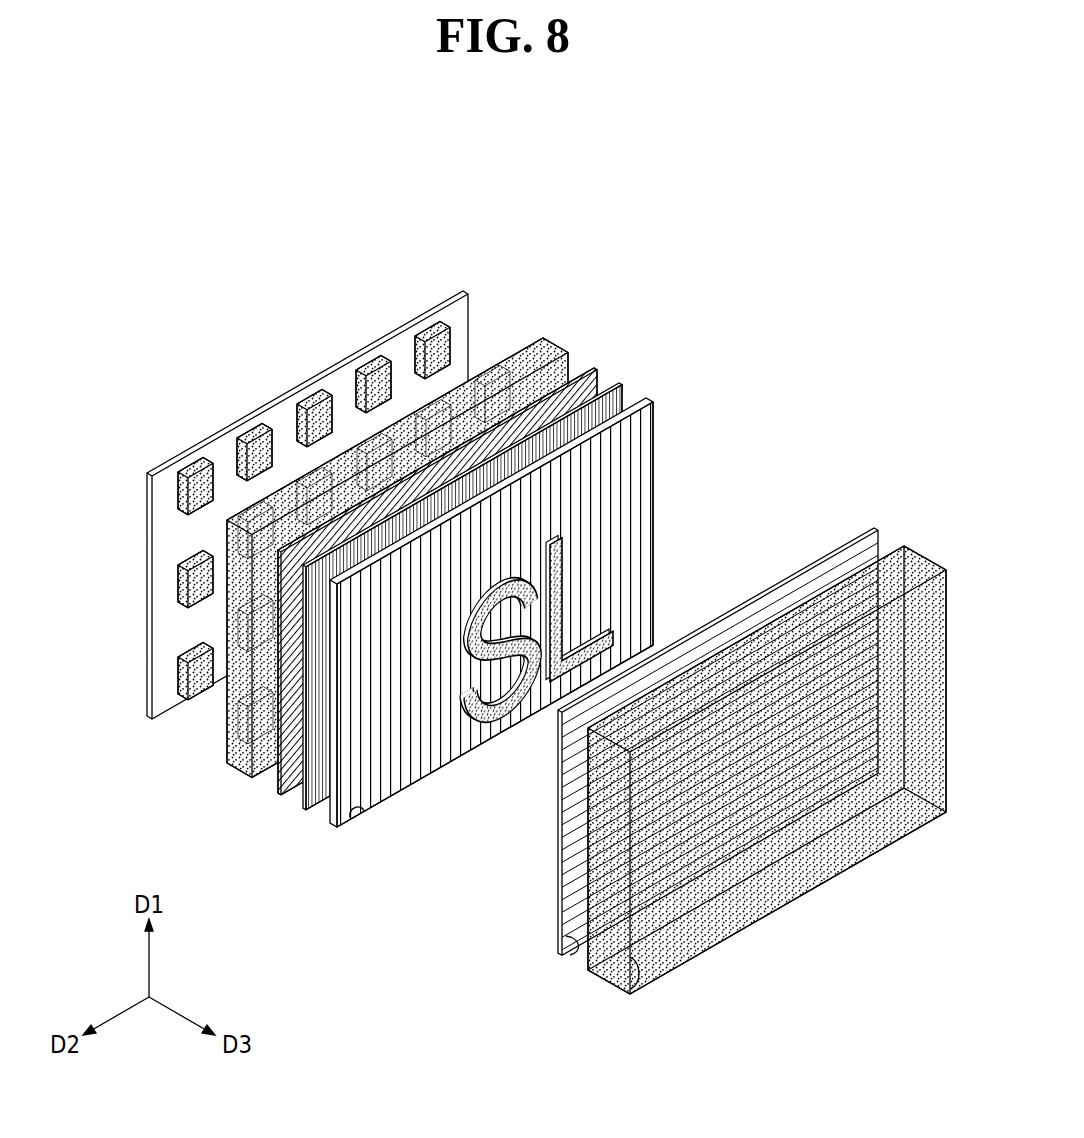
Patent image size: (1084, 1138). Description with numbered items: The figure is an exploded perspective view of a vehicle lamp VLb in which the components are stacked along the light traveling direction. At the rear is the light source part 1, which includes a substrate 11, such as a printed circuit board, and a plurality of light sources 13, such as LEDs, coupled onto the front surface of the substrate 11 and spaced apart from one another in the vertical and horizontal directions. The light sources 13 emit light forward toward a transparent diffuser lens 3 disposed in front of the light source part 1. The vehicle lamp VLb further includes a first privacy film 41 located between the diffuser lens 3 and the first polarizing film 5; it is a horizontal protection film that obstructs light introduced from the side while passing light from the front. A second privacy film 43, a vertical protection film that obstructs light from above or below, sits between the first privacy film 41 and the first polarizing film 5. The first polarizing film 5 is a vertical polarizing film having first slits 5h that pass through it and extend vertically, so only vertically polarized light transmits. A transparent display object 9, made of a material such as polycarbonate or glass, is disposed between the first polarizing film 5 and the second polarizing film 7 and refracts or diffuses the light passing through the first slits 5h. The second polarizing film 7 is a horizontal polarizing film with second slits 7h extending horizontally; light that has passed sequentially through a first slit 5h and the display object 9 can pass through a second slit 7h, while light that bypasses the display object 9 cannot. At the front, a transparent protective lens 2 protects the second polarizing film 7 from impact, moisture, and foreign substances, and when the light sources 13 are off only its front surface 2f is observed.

The light source part 1 is at (73, 486).
The substrate 11 is at (145, 492).
The light source 13 is at (179, 585).
The diffuser lens 3 is at (552, 346).
The first privacy film 41 is at (590, 372).
The second privacy film 43 is at (616, 390).
The first polarizing film 5 is at (328, 808).
The first slit 5h is at (360, 816).
The display object 9 is at (503, 714).
The second polarizing film 7 is at (558, 936).
The second slit 7h is at (578, 948).
The protective lens 2 is at (918, 567).
The front surface of the protective lens 2f is at (614, 988).
The vehicle lamp VLb is at (860, 218).